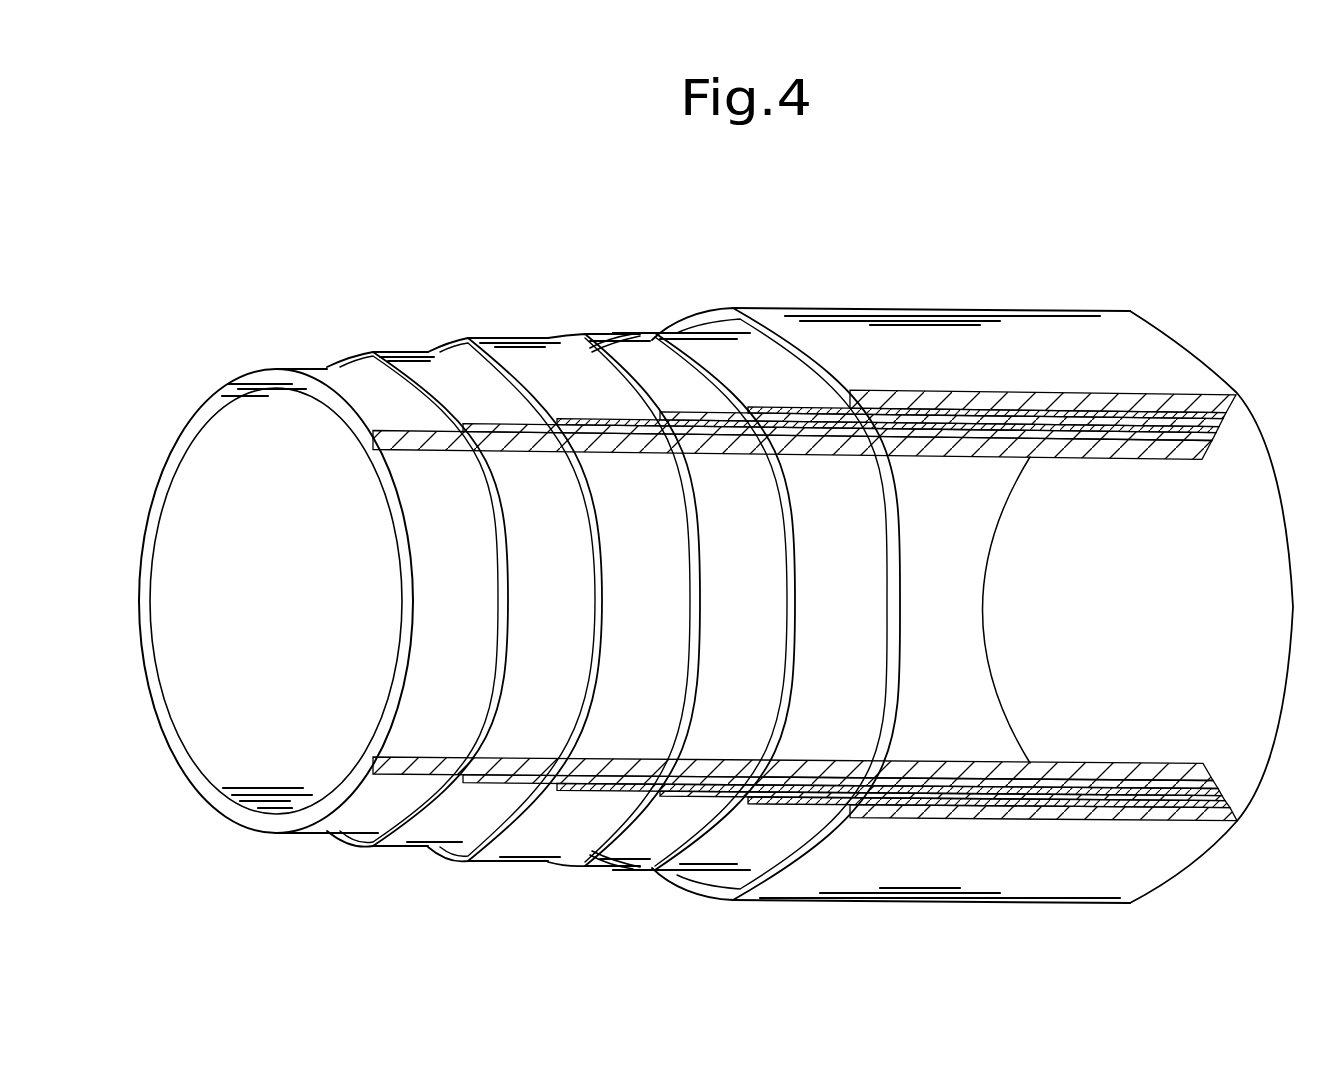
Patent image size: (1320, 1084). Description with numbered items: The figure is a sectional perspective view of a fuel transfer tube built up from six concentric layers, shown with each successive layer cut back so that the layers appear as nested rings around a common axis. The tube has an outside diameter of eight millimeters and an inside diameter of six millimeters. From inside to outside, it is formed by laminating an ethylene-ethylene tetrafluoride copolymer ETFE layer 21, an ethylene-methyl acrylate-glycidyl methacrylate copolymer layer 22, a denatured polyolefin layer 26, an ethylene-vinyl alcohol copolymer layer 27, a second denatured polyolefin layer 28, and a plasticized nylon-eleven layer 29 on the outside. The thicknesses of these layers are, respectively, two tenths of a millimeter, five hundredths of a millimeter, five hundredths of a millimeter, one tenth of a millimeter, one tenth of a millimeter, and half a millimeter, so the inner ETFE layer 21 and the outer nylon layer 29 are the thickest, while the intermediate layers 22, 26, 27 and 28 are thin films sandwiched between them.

The ethylene-ethylene tetrafluoride copolymer ETFE layer 21 is at (285, 362).
The ethylene-methyl acrylate-glycidyl methacrylate copolymer layer 22 is at (450, 375).
The denatured polyolefin layer 26 is at (549, 378).
The ethylene-vinyl alcohol copolymer layer 27 is at (648, 375).
The denatured polyolefin layer 28 is at (747, 352).
The plasticized Nylon 11 layer 29 is at (870, 345).